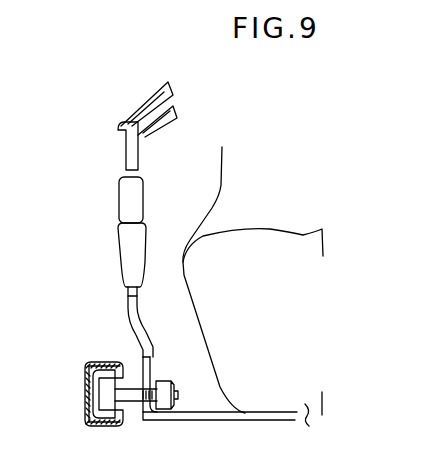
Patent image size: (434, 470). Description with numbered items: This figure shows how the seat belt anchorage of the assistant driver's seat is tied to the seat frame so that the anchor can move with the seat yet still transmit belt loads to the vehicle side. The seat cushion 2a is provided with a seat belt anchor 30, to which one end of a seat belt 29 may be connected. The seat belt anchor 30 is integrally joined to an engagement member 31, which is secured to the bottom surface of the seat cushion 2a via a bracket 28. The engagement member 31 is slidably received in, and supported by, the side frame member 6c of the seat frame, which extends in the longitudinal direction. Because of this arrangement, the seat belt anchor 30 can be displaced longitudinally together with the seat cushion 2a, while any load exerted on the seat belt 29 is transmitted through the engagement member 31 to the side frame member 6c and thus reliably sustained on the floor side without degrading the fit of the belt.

The seat cushion 2a is at (308, 425).
The seat belt 29 is at (158, 102).
The seat belt anchor 30 is at (118, 258).
The bracket 28 is at (189, 423).
The side frame member 6c is at (100, 362).
The engagement member 31 is at (105, 426).